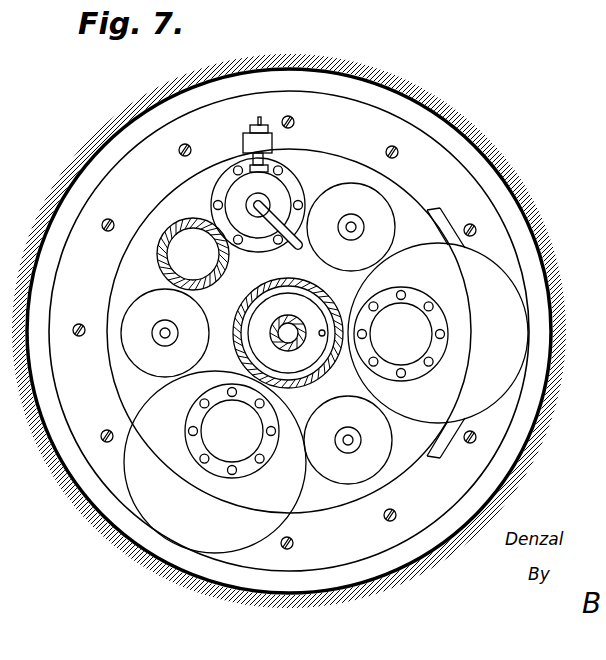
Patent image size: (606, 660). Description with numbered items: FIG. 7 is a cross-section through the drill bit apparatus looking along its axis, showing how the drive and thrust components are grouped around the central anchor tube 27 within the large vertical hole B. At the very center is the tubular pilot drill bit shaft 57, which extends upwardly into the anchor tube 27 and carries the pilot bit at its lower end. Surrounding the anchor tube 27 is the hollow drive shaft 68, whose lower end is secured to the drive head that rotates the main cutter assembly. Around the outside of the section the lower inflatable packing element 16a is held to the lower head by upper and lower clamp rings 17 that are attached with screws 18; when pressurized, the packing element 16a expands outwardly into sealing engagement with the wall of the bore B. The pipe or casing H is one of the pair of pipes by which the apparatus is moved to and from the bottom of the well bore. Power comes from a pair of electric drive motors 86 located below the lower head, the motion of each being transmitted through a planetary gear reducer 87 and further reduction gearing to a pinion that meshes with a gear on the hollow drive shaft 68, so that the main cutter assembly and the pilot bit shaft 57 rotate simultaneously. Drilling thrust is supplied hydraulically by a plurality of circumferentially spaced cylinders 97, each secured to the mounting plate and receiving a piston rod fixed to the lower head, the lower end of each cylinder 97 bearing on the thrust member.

The lower inflatable packing element 16a is at (548, 266).
The clamp rings 17 is at (118, 173).
The screws 18 is at (84, 324).
The vertical hole B is at (440, 120).
The pipe or casing H is at (158, 265).
The hollow drive shaft 68 is at (298, 246).
The central anchor tube 27 is at (264, 297).
The pilot drill bit shaft 57 is at (280, 346).
The electric drive motors 86 is at (400, 318).
The planetary gear reducer 87 is at (493, 377).
The cylinder 97 is at (381, 203).